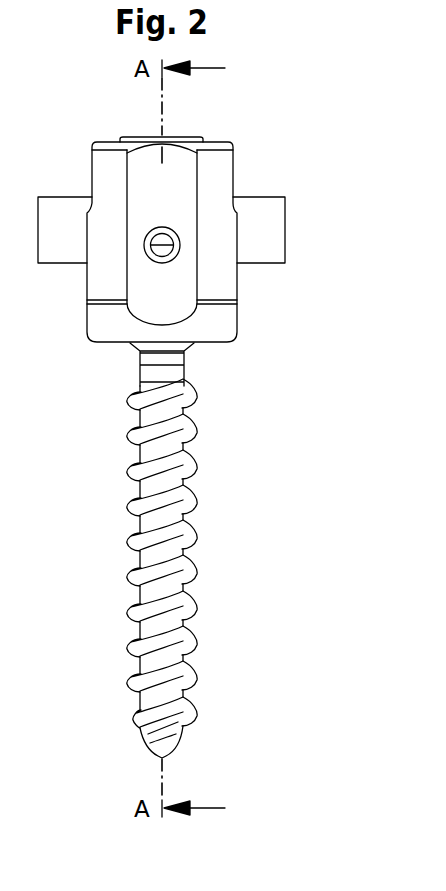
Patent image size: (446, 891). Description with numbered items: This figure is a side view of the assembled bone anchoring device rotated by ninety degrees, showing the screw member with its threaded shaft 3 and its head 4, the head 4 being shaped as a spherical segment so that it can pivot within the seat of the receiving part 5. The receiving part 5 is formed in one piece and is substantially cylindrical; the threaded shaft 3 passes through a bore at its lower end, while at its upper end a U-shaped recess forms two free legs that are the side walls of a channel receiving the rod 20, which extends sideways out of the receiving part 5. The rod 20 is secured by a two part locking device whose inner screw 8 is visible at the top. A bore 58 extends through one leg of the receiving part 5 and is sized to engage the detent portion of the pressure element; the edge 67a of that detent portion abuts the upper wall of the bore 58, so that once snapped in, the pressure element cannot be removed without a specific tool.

The threaded shaft 3 is at (190, 483).
The head 4 is at (186, 347).
The receiving part 5 is at (245, 152).
The inner screw 8 is at (197, 139).
The rod 20 is at (270, 205).
The bore 58 is at (176, 262).
The edge 67a is at (160, 239).